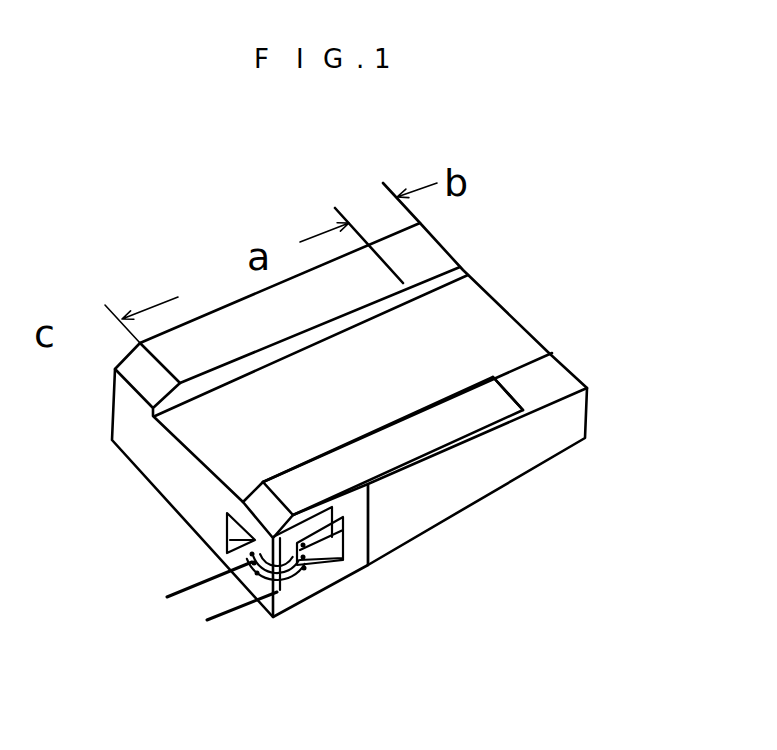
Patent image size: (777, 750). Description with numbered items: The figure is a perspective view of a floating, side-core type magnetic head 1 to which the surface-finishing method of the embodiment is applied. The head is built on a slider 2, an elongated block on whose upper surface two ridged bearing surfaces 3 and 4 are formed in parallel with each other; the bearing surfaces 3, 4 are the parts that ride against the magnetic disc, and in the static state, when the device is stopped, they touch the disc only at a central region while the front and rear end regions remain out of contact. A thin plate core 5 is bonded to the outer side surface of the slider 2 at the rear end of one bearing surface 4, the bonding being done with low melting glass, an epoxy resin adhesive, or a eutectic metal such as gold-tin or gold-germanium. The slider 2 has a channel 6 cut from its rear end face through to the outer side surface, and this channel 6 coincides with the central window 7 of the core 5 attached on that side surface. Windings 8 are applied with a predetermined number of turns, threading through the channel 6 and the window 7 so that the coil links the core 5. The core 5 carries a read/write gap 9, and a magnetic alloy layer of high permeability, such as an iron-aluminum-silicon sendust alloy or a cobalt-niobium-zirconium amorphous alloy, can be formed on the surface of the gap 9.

The side core type magnetic head 1 is at (472, 272).
The slider 2 is at (515, 323).
The bearing surface 3 is at (223, 325).
The bearing surface 4 is at (475, 415).
The thin plate core 5 is at (358, 543).
The channel 6 is at (245, 535).
The central window 7 is at (333, 583).
The windings 8 is at (255, 600).
The read/write gap 9 is at (327, 505).